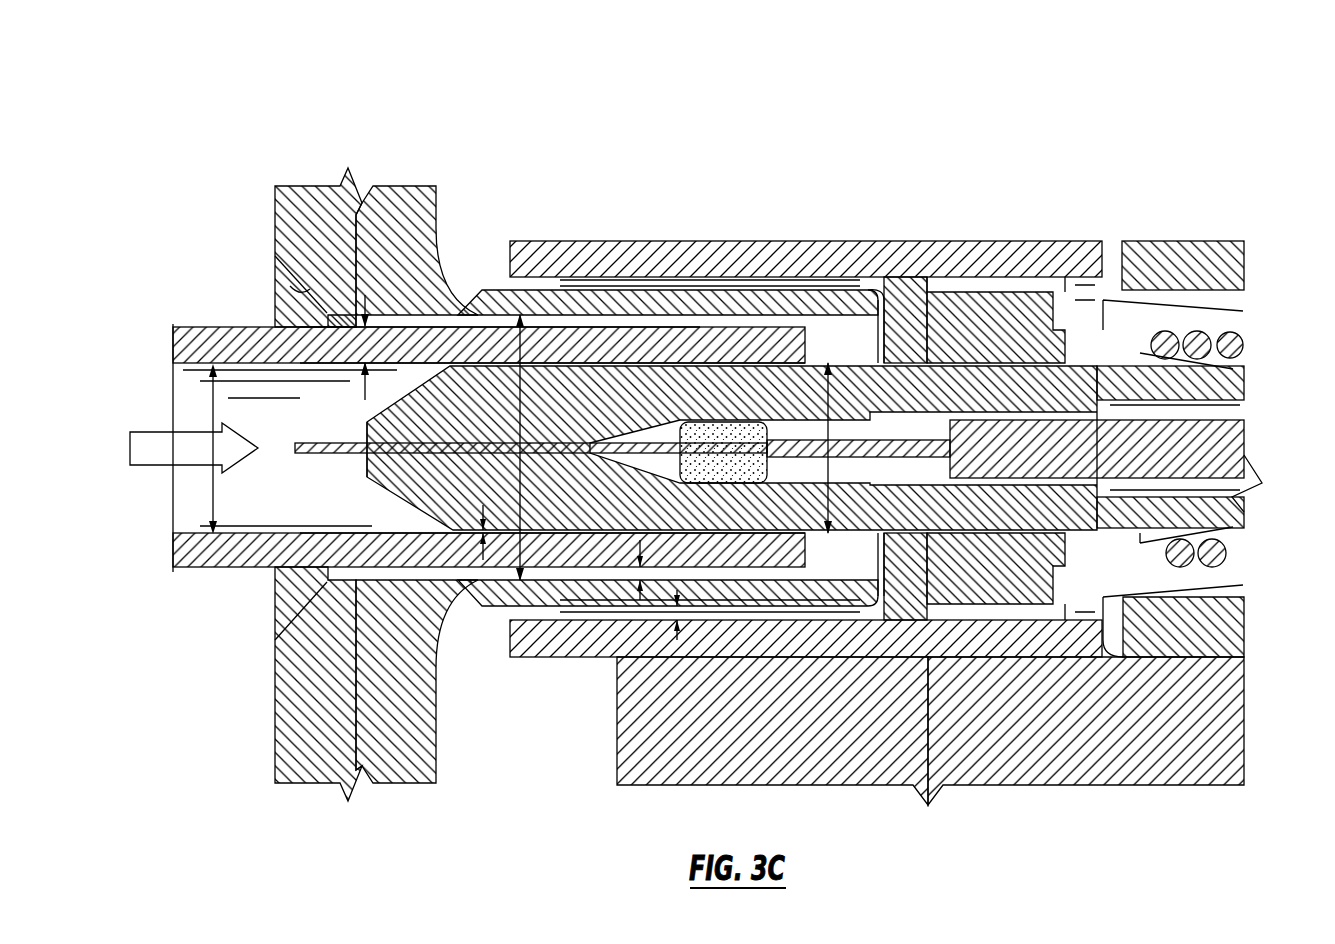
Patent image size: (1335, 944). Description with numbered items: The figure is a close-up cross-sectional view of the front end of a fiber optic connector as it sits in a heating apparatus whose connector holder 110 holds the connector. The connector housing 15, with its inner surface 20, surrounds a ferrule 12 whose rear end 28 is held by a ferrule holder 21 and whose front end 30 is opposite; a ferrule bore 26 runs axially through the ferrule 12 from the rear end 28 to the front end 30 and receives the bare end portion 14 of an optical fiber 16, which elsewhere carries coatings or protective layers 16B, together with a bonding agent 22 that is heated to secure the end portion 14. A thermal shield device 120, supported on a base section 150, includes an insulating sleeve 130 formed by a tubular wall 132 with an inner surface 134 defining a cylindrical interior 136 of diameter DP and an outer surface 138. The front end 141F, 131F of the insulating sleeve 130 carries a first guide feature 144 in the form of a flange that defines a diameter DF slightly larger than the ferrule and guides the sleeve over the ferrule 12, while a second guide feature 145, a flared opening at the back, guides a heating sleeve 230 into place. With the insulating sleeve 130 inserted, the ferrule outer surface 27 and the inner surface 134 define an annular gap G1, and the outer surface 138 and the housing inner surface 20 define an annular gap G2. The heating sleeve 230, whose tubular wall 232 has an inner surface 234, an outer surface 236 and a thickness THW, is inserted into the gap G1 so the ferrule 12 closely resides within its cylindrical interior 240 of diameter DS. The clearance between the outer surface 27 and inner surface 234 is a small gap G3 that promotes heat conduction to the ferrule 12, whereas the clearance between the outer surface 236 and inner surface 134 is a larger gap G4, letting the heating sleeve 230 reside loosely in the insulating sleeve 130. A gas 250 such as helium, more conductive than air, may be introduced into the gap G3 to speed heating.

The thermal shield device 120 is at (366, 148).
The base section 150 is at (400, 753).
The heating sleeve 230 is at (213, 314).
The cylindrical interior 240 is at (268, 405).
The second guide feature 145 is at (300, 290).
The tubular wall 232 is at (623, 345).
The inner surface 234 is at (372, 522).
The front end 30 is at (363, 465).
The ferrule 12 is at (1030, 345).
The end portion 14 is at (665, 468).
The bonding agent 22 is at (745, 460).
The ferrule bore 26 is at (472, 443).
The sleeve 130 is at (676, 241).
The tubular wall 132 is at (533, 297).
The inner surface 134 is at (583, 335).
The outer surface 138 is at (700, 278).
The connector housing 15 is at (597, 248).
The inner surface 20 is at (748, 290).
The first guide feature 144 is at (840, 295).
The front end 141F is at (880, 300).
The front end 131F is at (900, 268).
The ferrule holder 21 is at (998, 310).
The optical fiber 16 is at (1122, 457).
The coatings or protective layers 16B is at (1220, 462).
The rear end 28 is at (1116, 352).
The outer surface 27 is at (1110, 565).
The connector holder 110 is at (1195, 748).
The cylindrical interior 136 is at (448, 297).
The outer surface 236 is at (462, 620).
The gas 250 is at (150, 458).
The diameter DS is at (213, 410).
The wall thickness THW is at (359, 321).
The diameter DP is at (522, 398).
The diameter DF is at (868, 468).
The annular gap G1 is at (872, 548).
The annular gap G2 is at (642, 605).
The gap G3 is at (483, 515).
The gap G4 is at (628, 528).